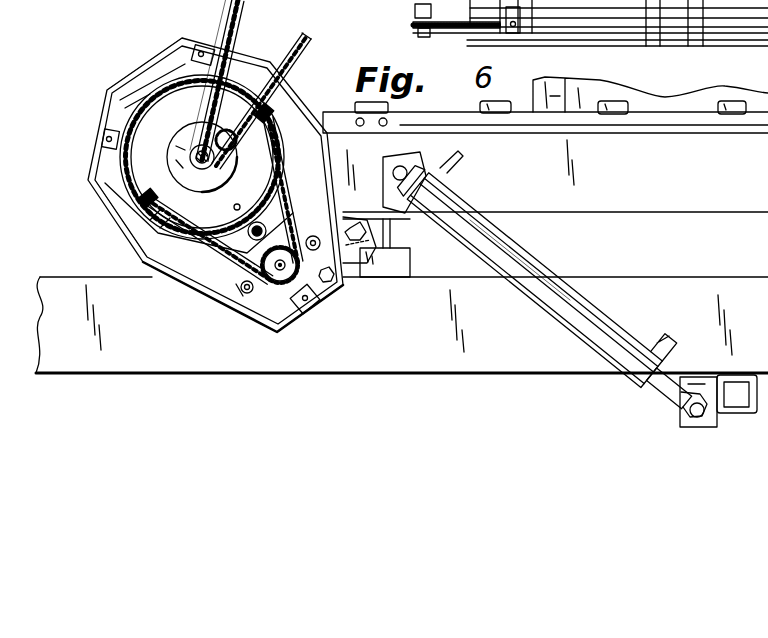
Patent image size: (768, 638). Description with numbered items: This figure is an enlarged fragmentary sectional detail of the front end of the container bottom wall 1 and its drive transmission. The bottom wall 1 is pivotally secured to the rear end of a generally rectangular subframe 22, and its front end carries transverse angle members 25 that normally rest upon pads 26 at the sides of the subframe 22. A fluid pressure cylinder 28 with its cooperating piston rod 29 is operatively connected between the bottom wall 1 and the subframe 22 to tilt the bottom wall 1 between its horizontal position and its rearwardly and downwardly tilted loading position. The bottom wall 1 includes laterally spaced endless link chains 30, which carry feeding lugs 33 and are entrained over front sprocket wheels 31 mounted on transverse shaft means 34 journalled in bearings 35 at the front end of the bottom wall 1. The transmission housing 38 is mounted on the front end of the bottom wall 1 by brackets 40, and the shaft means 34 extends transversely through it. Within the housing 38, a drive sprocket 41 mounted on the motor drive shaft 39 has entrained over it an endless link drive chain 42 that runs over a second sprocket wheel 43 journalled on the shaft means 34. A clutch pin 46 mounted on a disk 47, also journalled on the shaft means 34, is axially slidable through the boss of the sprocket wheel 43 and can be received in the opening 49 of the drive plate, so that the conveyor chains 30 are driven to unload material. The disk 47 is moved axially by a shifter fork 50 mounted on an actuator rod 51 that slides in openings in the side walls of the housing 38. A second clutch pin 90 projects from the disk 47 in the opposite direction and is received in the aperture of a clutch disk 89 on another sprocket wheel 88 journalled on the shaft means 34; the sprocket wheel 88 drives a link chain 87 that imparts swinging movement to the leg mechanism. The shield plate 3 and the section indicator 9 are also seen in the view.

The bottom wall 1 is at (686, 211).
The shield plate 3 is at (715, 83).
The section line 9- 9 is at (218, 18).
The subframe 22 is at (148, 372).
The transverse angle members 25 is at (392, 232).
The pads 26 is at (398, 268).
The fluid pressure cylinders 28 is at (528, 266).
The piston rods 29 is at (668, 398).
The endless link chains 30 is at (372, 118).
The front sprocket wheels 31 is at (420, 30).
The feeding lugs 33 is at (493, 107).
The shaft means 34 is at (203, 172).
The bearings 35 is at (415, 12).
The transmission housing 38 is at (100, 116).
The drive shaft 39 is at (276, 279).
The brackets 40 is at (352, 252).
The drive sprocket 41 is at (284, 281).
The endless link drive chain 42 is at (200, 270).
The second sprocket wheel 43 is at (182, 252).
The clutch pin 46 is at (239, 205).
The disk 47 is at (140, 167).
The opening 49 is at (116, 70).
The shifter fork 50 is at (128, 233).
The actuator rod 51 is at (240, 290).
The link chain 87 is at (312, 50).
The sprocket wheel 88 is at (222, 140).
The clutch disk 89 is at (175, 168).
The clutch pin 90 is at (235, 168).